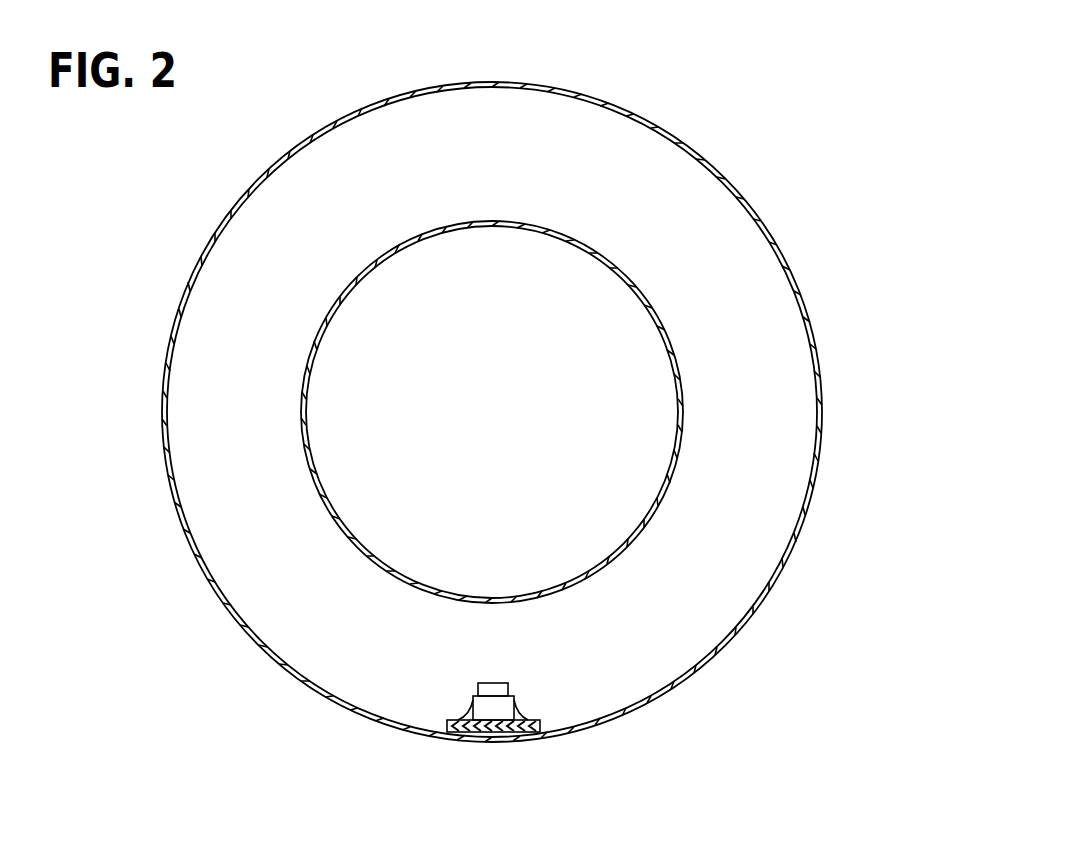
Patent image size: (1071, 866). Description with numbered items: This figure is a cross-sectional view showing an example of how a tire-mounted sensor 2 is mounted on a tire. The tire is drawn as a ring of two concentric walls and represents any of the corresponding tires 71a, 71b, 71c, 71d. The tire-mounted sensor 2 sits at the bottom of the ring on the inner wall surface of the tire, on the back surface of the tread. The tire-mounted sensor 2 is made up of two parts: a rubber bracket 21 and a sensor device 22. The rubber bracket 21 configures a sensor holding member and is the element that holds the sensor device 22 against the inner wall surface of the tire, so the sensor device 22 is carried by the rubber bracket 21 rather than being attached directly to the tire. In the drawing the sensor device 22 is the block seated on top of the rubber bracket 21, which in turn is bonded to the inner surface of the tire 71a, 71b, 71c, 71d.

The tire-mounted sensor 2 is at (440, 740).
The rubber bracket 21 is at (518, 715).
The sensor device 22 is at (493, 703).
The tire 71a is at (553, 412).
The tire 71b is at (553, 412).
The tire 71c is at (553, 412).
The tire 71d is at (655, 699).